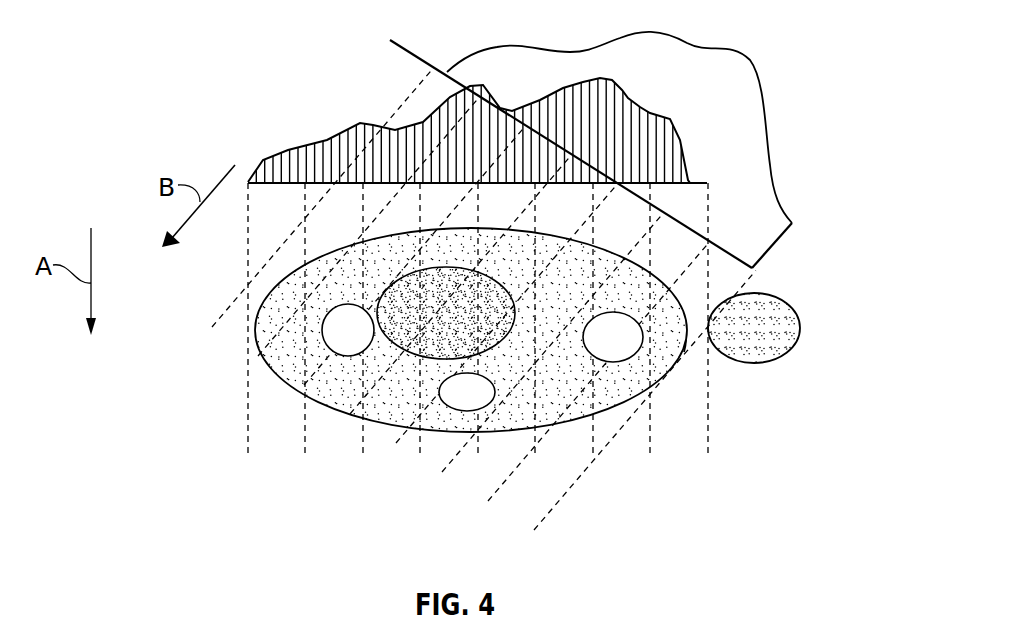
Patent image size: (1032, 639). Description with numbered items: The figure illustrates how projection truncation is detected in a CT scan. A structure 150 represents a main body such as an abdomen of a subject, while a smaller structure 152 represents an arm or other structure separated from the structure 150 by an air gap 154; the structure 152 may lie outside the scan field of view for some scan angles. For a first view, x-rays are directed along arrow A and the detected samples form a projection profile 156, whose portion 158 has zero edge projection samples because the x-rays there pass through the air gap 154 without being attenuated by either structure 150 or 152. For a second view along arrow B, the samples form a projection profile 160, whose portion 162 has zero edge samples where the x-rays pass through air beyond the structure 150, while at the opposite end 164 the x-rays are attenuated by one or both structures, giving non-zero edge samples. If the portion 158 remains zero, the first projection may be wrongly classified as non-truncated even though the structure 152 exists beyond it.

The structure 150 is at (276, 325).
The structure 152 is at (799, 338).
The air gap 154 is at (698, 362).
The projection profile 156 is at (298, 128).
The portion 158 is at (702, 170).
The projection profile 160 is at (692, 43).
The portion 162 is at (449, 48).
The opposite end 164 is at (793, 244).